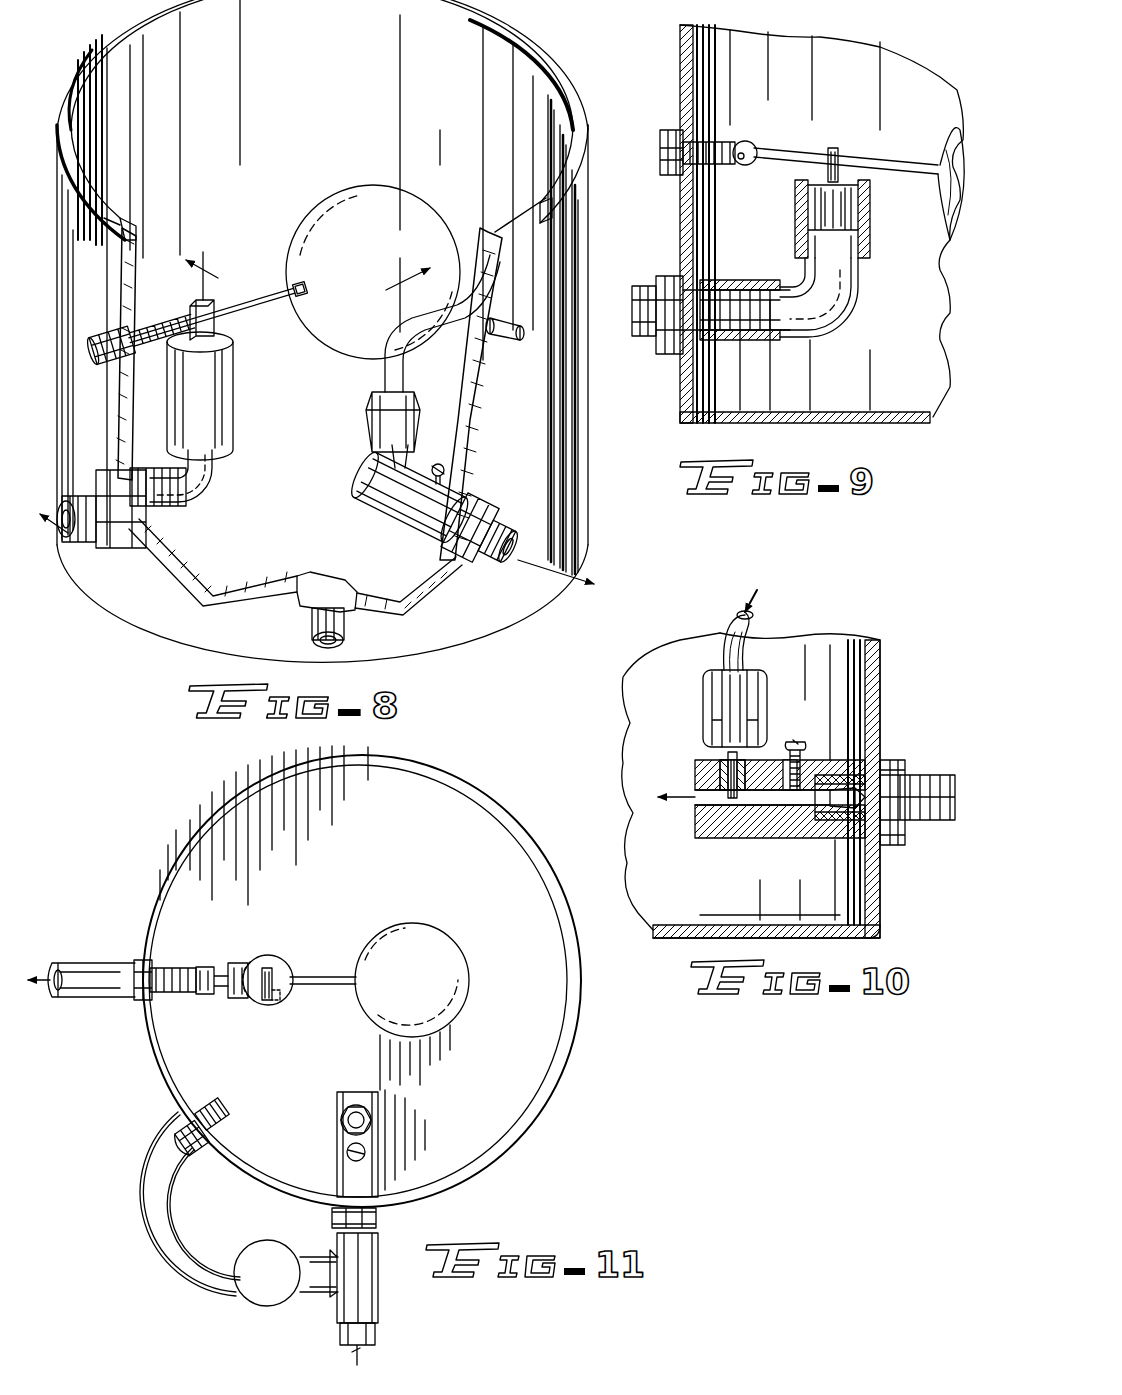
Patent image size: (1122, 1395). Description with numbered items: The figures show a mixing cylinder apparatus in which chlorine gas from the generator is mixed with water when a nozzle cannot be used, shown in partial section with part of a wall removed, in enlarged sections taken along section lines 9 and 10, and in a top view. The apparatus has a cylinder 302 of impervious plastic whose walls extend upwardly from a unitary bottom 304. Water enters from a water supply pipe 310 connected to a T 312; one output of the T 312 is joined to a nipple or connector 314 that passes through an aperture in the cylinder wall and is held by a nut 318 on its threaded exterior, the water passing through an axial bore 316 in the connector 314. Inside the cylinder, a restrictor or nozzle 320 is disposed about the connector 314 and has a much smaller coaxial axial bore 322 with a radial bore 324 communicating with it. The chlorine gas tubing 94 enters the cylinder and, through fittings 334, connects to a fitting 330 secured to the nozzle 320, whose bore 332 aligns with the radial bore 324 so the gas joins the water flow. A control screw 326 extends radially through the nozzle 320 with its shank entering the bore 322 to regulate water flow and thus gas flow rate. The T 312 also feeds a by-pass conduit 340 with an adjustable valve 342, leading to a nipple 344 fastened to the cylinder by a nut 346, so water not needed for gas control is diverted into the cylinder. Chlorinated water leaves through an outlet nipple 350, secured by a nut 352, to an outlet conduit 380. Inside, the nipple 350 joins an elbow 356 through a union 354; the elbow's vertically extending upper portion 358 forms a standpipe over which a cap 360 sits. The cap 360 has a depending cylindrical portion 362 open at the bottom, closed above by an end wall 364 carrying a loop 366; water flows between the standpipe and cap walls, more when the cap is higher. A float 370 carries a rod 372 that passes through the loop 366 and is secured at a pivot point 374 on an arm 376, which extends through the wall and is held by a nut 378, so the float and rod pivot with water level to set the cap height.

In FIG. 8, the section line 9— 9 is at (135, 411).
In FIG. 8, the section line 10— 10 is at (473, 438).
In FIG. 8, the tubing or conduit 94 is at (504, 318).
In FIG. 10, the tubing or conduit 94 is at (725, 622).
In FIG. 8, the cylinder 302 is at (578, 508).
In FIG. 9, the cylinder 302 is at (680, 32).
In FIG. 10, the cylinder 302 is at (872, 700).
In FIG. 11, the cylinder 302 is at (466, 1180).
In FIG. 8, the bottom 304 is at (322, 486).
In FIG. 9, the bottom 304 is at (790, 424).
In FIG. 10, the bottom 304 is at (648, 930).
In FIG. 11, the water supply pipe or conduit 310 is at (342, 1338).
In FIG. 11, the T 312 is at (378, 1310).
In FIG. 8, the nipple or connector 314 is at (496, 565).
In FIG. 10, the nipple or connector 314 is at (930, 775).
In FIG. 11, the nipple or connector 314 is at (380, 1135).
In FIG. 10, the bore 316 is at (835, 826).
In FIG. 8, the nut 318 is at (486, 510).
In FIG. 10, the nut 318 is at (885, 838).
In FIG. 11, the nut 318 is at (332, 1216).
In FIG. 10, the restrictor or nozzle 320 is at (733, 840).
In FIG. 10, the axial bore 322 is at (700, 800).
In FIG. 10, the radial bore 324 is at (712, 770).
In FIG. 8, the adjusting or control screw 326 is at (446, 466).
In FIG. 10, the adjusting or control screw 326 is at (804, 742).
In FIG. 10, the fitting 330 is at (718, 762).
In FIG. 10, the bore 332 is at (722, 745).
In FIG. 8, the fittings 334 is at (364, 432).
In FIG. 10, the fittings 334 is at (698, 700).
In FIG. 11, the pipe or conduit 340 is at (164, 1262).
In FIG. 11, the valve 342 is at (262, 1308).
In FIG. 8, the connector or nipple 344 is at (310, 640).
In FIG. 11, the connector or nipple 344 is at (226, 1124).
In FIG. 8, the nut 346 is at (300, 598).
In FIG. 11, the nut 346 is at (206, 1148).
In FIG. 8, the connector or nipple 350 is at (82, 548).
In FIG. 9, the connector or nipple 350 is at (648, 284).
In FIG. 8, the nut 352 is at (126, 550).
In FIG. 9, the nut 352 is at (668, 356).
In FIG. 8, the union 354 is at (170, 508).
In FIG. 9, the union 354 is at (740, 342).
In FIG. 8, the elbow 356 is at (214, 482).
In FIG. 9, the elbow 356 is at (815, 335).
In FIG. 11, the elbow 356 is at (238, 1000).
In FIG. 9, the vertically extending upper portion 358 is at (855, 283).
In FIG. 8, the cap 360 is at (236, 415).
In FIG. 9, the cap 360 is at (790, 205).
In FIG. 11, the cap 360 is at (272, 953).
In FIG. 9, the cylindrical portion 362 is at (870, 212).
In FIG. 9, the end wall 364 is at (815, 186).
In FIG. 11, the end wall 364 is at (285, 996).
In FIG. 9, the loop 366 is at (834, 146).
In FIG. 11, the loop 366 is at (266, 1000).
In FIG. 8, the float 370 is at (398, 195).
In FIG. 9, the float 370 is at (945, 150).
In FIG. 11, the float 370 is at (462, 962).
In FIG. 8, the rod 372 is at (248, 312).
In FIG. 9, the rod 372 is at (880, 155).
In FIG. 11, the rod 372 is at (330, 977).
In FIG. 8, the pivot point 374 is at (190, 312).
In FIG. 9, the pivot point 374 is at (750, 143).
In FIG. 11, the pivot point 374 is at (206, 996).
In FIG. 8, the arm 376 is at (161, 330).
In FIG. 9, the arm 376 is at (716, 168).
In FIG. 11, the arm 376 is at (180, 966).
In FIG. 8, the nut 378 is at (104, 380).
In FIG. 9, the nut 378 is at (672, 128).
In FIG. 11, the nut 378 is at (136, 960).
In FIG. 11, the water pipe or conduit 380 is at (96, 998).